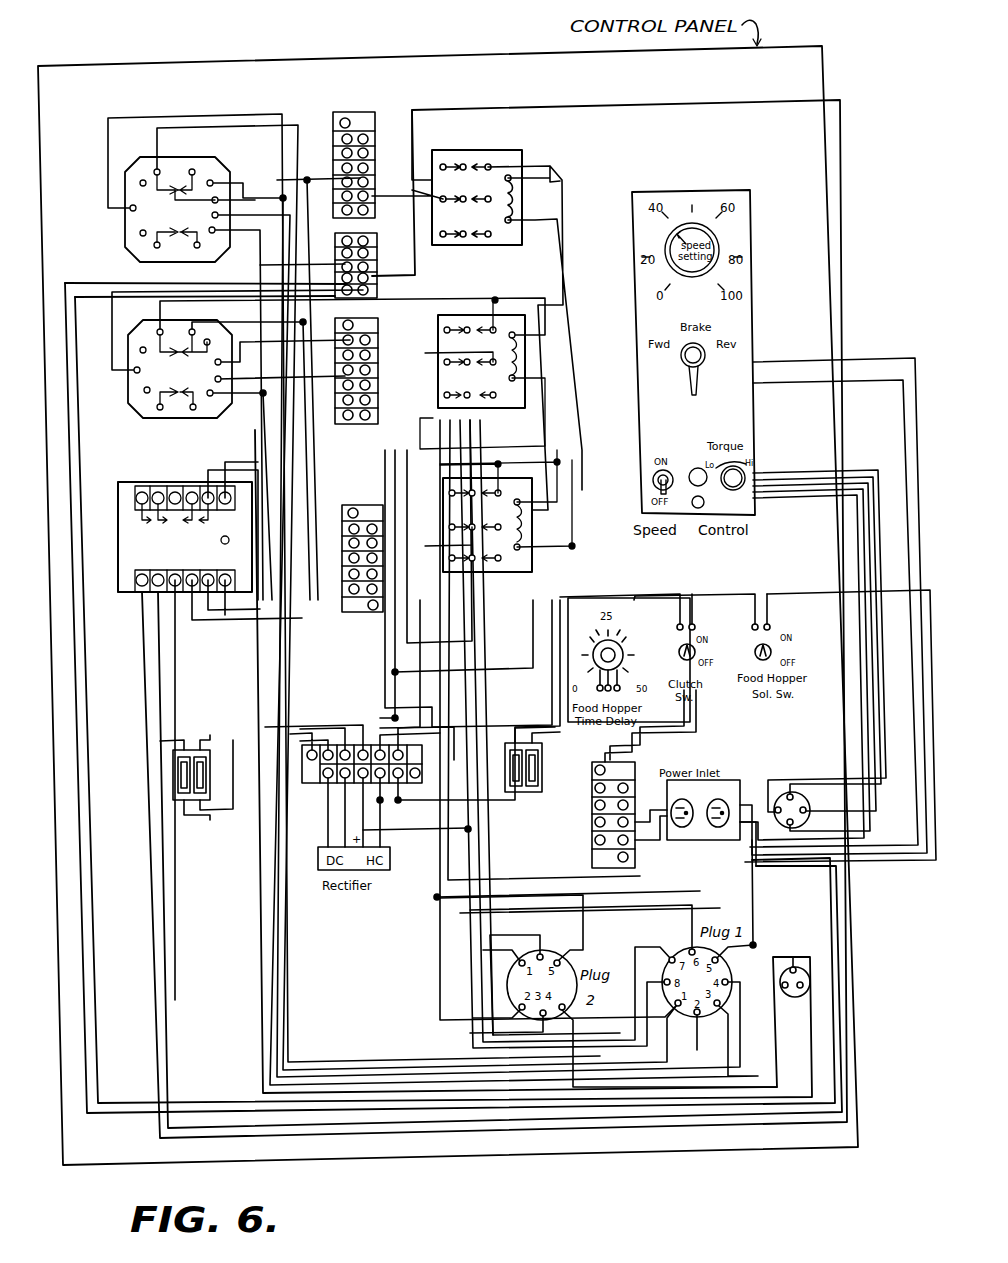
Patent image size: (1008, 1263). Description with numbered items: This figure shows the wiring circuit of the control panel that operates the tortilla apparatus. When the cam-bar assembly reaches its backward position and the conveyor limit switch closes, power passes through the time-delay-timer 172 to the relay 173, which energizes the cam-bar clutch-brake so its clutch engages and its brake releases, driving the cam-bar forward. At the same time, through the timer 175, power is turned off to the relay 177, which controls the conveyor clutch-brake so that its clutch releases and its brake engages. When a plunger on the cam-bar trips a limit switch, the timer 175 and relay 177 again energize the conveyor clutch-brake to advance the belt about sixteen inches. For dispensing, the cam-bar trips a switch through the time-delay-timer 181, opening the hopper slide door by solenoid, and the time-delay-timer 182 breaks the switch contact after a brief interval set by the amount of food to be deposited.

The time-delay-timer 172 is at (158, 417).
The relay 173 is at (528, 396).
The timer 175 is at (124, 236).
The relay 177 is at (532, 530).
The time-delay-timer 181 is at (120, 592).
The time-delay-timer 182 is at (185, 560).